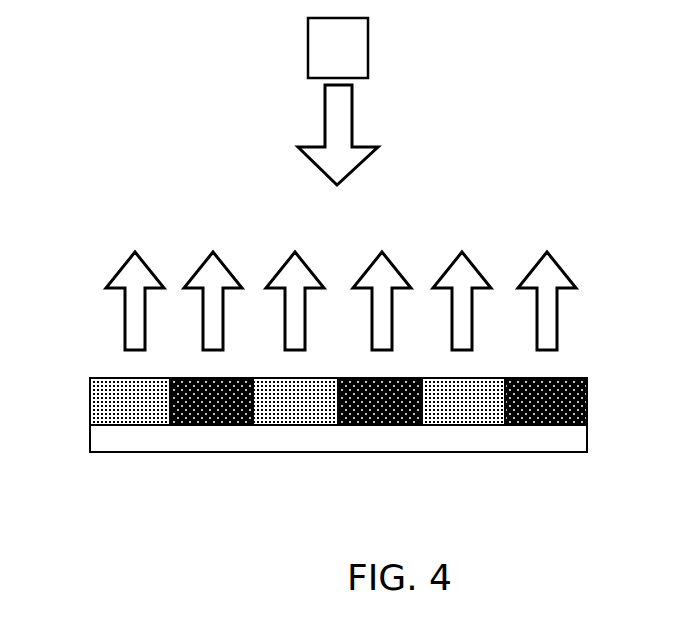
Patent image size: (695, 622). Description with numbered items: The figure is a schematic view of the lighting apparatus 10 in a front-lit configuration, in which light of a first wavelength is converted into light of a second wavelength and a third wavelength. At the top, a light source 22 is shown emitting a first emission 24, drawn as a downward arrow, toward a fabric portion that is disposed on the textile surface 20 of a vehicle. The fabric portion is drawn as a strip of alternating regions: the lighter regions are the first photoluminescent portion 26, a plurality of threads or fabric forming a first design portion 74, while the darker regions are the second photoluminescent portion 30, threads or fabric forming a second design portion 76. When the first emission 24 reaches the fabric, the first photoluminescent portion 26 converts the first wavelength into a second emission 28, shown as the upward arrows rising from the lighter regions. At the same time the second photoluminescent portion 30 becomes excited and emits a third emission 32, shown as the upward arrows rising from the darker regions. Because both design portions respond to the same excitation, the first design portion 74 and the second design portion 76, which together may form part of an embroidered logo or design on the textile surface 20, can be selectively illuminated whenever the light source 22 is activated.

The lighting apparatus 10 is at (522, 95).
The textile surface 20 is at (575, 440).
The light source 22 is at (338, 48).
The first emission 24 is at (347, 113).
The first photoluminescent portion 26 is at (267, 385).
The first design portion 74 is at (445, 383).
The second emission 28 is at (128, 306).
The second photoluminescent portion 30 is at (378, 444).
The second design portion 76 is at (233, 422).
The third emission 32 is at (212, 329).